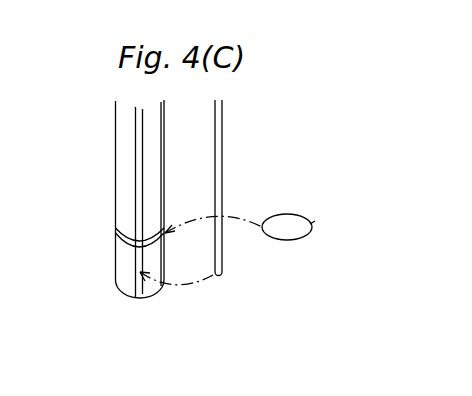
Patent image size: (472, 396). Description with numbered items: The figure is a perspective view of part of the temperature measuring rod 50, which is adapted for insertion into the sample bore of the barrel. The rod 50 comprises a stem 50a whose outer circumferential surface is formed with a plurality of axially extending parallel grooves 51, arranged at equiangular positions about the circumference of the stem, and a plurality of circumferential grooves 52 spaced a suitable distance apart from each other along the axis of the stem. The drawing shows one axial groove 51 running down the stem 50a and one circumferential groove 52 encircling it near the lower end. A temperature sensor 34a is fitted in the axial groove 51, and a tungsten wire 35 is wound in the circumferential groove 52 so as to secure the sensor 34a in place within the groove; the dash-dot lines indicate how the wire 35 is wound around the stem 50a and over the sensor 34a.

The temperature measuring rod 50 is at (113, 140).
The stem 50a is at (113, 182).
The axially extending parallel groove 51 is at (140, 298).
The circumferential groove 52 is at (113, 228).
The temperature sensor 34a is at (222, 170).
The tungsten wire 35 is at (290, 240).